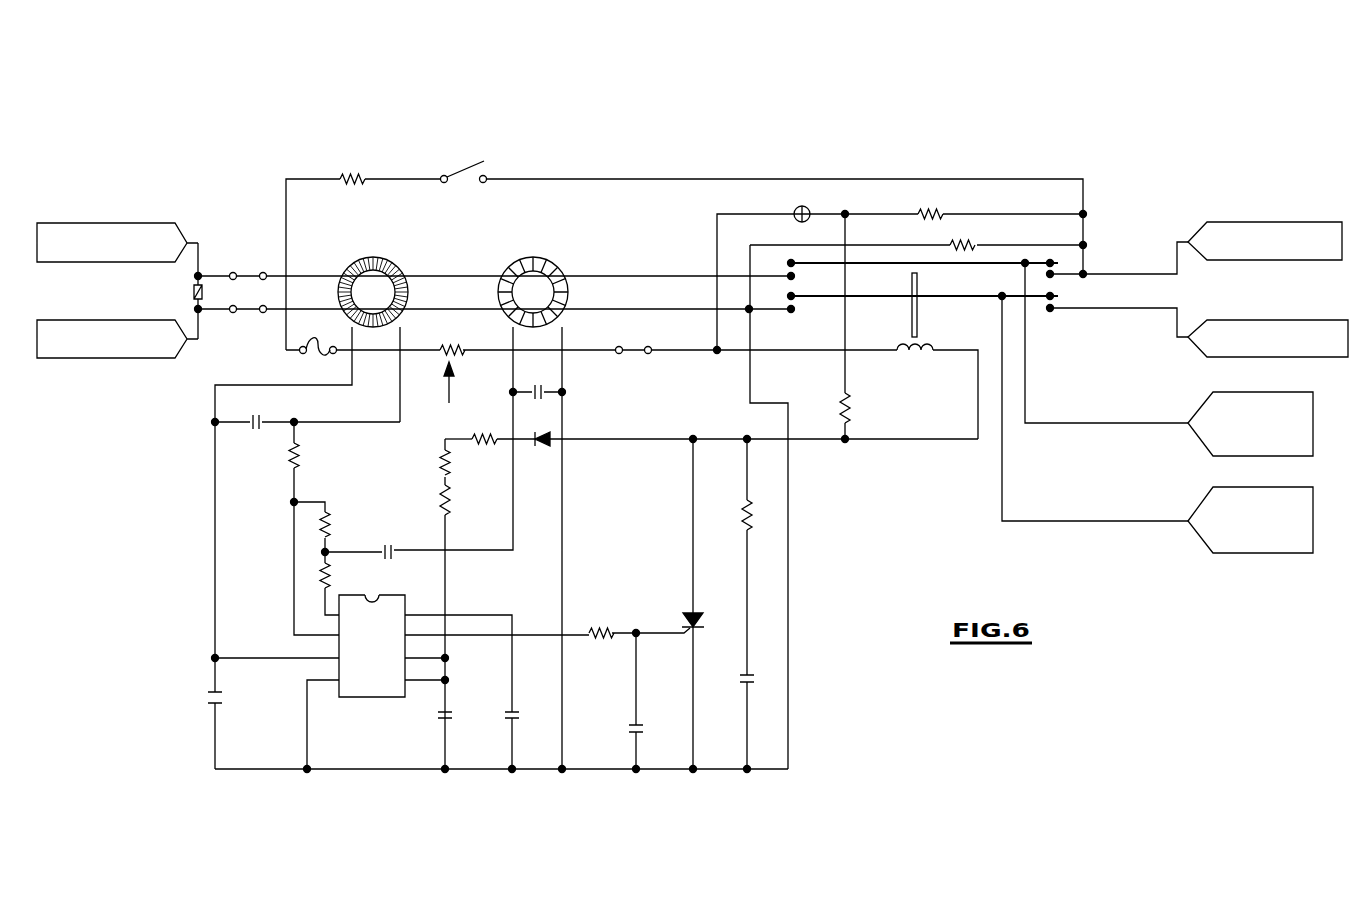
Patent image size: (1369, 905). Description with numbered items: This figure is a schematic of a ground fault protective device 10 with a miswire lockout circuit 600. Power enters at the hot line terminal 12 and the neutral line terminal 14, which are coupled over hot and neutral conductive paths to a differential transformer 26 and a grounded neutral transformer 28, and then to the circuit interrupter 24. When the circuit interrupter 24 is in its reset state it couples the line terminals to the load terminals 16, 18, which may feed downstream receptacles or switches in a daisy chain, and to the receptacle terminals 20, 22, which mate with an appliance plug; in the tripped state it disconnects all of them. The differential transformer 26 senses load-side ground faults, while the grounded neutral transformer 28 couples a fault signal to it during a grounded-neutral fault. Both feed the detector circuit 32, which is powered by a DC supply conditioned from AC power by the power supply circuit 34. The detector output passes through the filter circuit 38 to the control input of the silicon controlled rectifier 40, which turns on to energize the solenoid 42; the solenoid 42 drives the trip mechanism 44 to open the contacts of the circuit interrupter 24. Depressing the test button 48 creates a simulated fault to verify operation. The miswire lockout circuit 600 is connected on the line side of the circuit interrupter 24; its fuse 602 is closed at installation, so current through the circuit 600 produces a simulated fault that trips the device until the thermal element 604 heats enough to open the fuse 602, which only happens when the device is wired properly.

The protective device 10 is at (606, 148).
The hot line terminal 12 is at (202, 242).
The neutral line terminal 14 is at (195, 344).
The hot load terminal 16 is at (1185, 240).
The neutral load terminal 18 is at (1185, 340).
The hot receptacle terminal 20 is at (1187, 426).
The neutral receptacle terminal 22 is at (1187, 524).
The circuit interrupter 24 is at (773, 282).
The differential transformer 26 is at (357, 262).
The grounded neutral transformer 28 is at (533, 257).
The detector circuit 32 is at (244, 613).
The power supply circuit 34 is at (427, 442).
The filter circuit 38 is at (625, 730).
The SCR 40 is at (686, 612).
The solenoid 42 is at (928, 356).
The trip mechanism 44 is at (910, 326).
The test button 48 is at (463, 168).
The miswire lock-out circuit 600 is at (455, 398).
The fuse 602 is at (300, 356).
The thermal element 604 is at (441, 343).